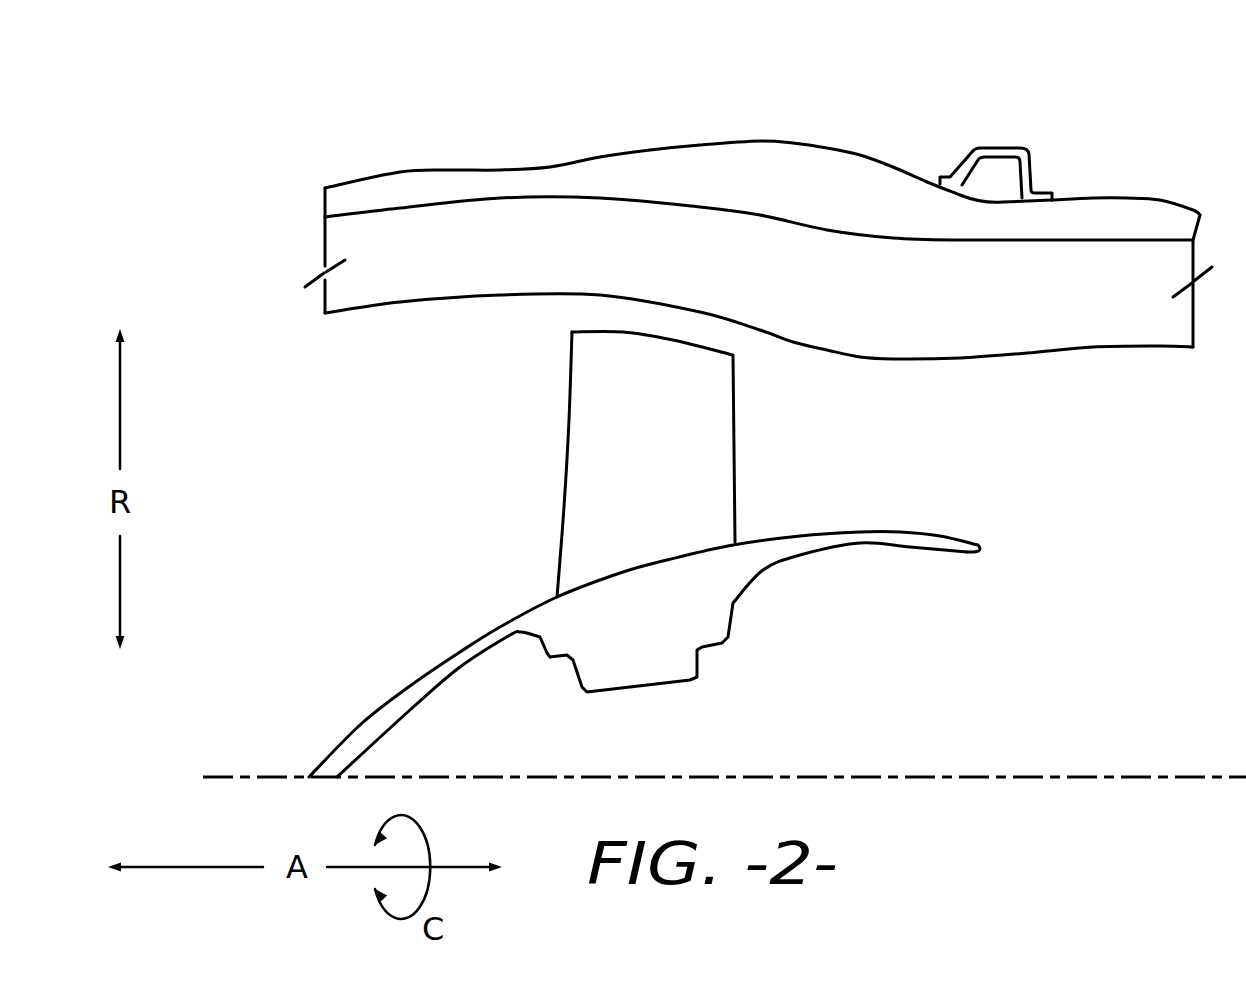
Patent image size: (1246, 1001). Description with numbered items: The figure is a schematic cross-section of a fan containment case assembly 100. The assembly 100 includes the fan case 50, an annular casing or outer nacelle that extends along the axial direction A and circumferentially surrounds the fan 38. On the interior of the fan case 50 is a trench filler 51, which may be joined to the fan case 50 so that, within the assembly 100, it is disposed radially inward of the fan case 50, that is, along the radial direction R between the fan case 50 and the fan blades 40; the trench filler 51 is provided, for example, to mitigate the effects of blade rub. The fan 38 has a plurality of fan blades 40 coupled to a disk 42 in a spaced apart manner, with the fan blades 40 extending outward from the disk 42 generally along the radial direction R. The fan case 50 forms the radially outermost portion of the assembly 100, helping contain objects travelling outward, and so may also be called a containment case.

The fan containment case assembly 100 is at (735, 188).
The fan case 50 is at (400, 173).
The trench filler 51 is at (347, 235).
The fan 38 is at (644, 554).
The fan blade 40 is at (712, 468).
The disk 42 is at (507, 635).